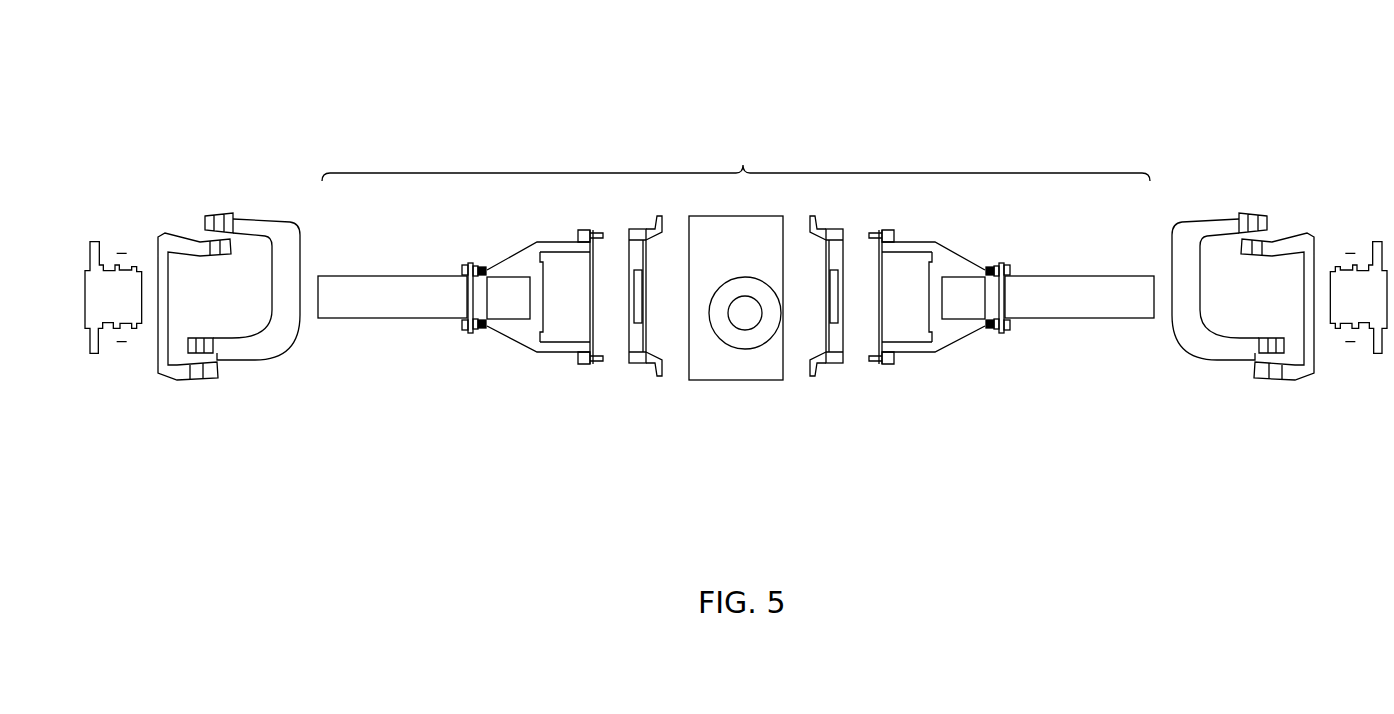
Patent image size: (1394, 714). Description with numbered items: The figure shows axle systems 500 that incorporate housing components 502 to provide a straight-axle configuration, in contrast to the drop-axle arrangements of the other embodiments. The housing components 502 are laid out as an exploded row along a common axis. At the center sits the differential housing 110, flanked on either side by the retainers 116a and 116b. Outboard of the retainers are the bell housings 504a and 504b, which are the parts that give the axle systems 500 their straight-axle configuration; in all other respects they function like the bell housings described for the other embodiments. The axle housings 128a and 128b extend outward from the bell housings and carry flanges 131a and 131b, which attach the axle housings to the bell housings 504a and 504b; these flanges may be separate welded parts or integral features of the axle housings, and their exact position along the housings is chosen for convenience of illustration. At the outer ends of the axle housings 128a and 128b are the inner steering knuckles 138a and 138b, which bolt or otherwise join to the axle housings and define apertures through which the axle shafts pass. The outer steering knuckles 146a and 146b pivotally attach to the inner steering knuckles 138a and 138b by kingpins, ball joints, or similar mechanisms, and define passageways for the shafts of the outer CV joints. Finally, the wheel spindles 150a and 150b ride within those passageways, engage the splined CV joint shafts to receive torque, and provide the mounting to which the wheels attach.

The axle systems 500 is at (815, 86).
The housing components 502 is at (736, 158).
The differential housing 110 is at (723, 363).
The retainer 116a is at (836, 368).
The retainer 116b is at (636, 340).
The axle housing 128a is at (1043, 292).
The axle housing 128b is at (372, 290).
The flange 131a is at (1003, 334).
The flange 131b is at (459, 308).
The bell housing 504a is at (947, 330).
The bell housing 504b is at (512, 330).
The inner steering knuckle 138a is at (1177, 319).
The inner steering knuckle 138b is at (255, 344).
The outer steering knuckle 146a is at (1310, 366).
The outer steering knuckle 146b is at (160, 375).
The wheel spindle 150a is at (1357, 278).
The wheel spindle 150b is at (113, 314).